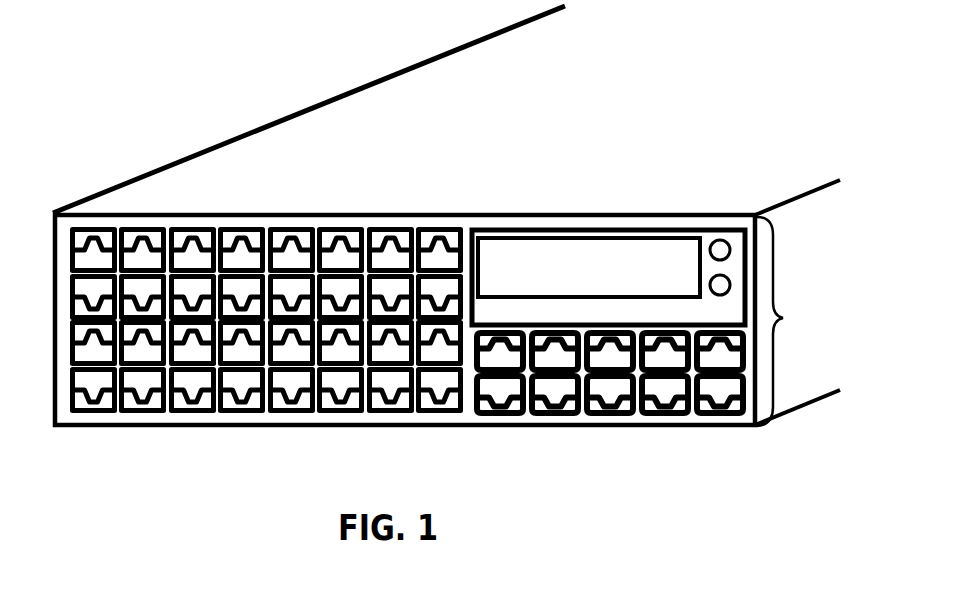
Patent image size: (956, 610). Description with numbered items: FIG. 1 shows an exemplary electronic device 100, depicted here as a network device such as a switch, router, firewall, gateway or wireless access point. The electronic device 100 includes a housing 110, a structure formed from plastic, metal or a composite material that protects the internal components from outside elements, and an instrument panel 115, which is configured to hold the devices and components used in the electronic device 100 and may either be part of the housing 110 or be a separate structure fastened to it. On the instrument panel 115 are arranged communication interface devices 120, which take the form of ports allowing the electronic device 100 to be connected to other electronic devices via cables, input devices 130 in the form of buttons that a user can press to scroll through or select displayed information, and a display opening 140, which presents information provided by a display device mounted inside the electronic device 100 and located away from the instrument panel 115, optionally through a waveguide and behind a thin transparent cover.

The electronic device 100 is at (176, 59).
The housing 110 is at (226, 138).
The instrument panel 115 is at (797, 303).
The communication interface devices 120 is at (326, 204).
The input devices 130 is at (722, 228).
The display opening 140 is at (612, 220).